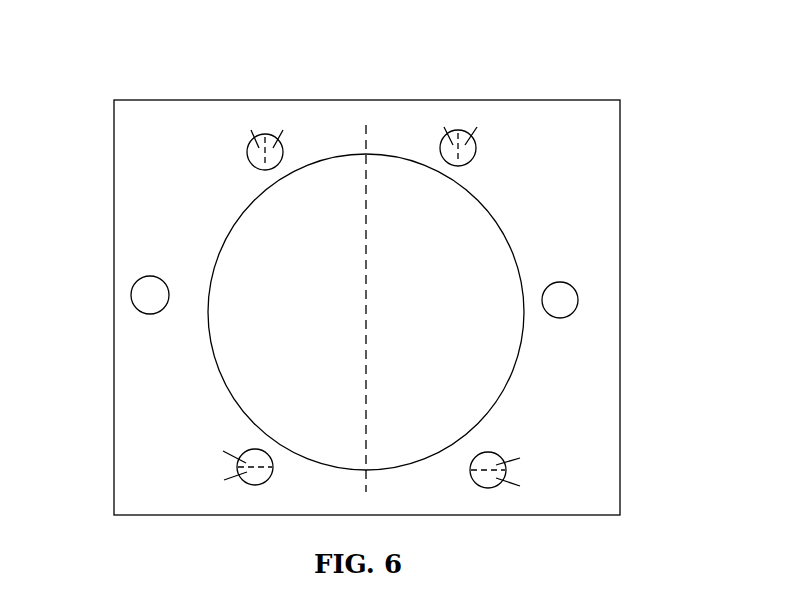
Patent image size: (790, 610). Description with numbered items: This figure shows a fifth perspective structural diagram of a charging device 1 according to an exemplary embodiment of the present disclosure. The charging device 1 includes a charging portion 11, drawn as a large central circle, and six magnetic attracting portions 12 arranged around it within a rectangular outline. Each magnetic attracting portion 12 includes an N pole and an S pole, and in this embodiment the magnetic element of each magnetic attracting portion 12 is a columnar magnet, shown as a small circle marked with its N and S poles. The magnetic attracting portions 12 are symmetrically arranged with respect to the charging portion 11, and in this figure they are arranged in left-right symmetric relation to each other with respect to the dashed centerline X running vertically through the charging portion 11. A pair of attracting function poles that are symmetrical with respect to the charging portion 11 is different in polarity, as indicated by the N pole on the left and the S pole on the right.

The charging device 1 is at (103, 89).
The charging portion 11 is at (496, 245).
The magnetic attracting portions 12 is at (440, 150).